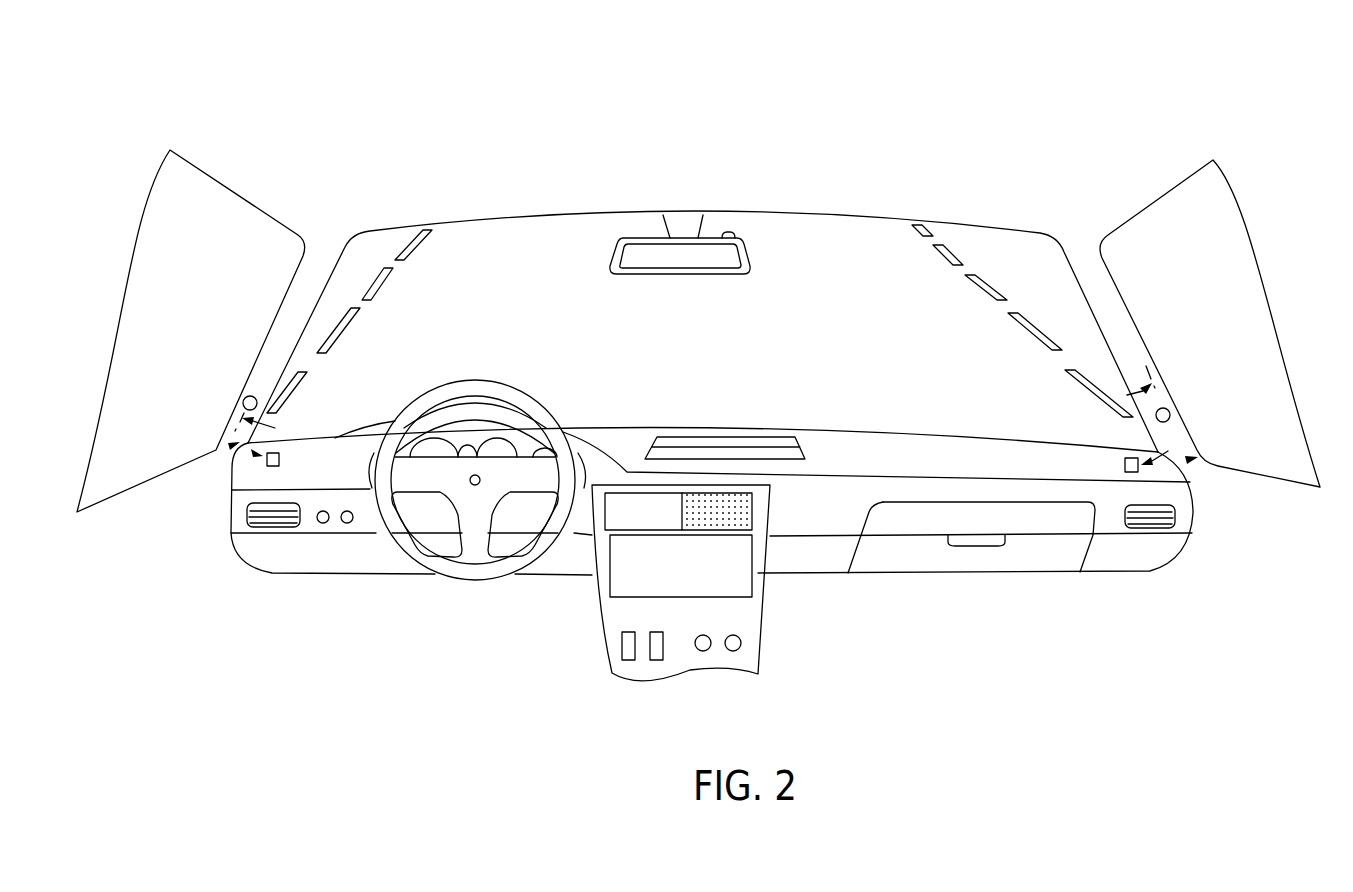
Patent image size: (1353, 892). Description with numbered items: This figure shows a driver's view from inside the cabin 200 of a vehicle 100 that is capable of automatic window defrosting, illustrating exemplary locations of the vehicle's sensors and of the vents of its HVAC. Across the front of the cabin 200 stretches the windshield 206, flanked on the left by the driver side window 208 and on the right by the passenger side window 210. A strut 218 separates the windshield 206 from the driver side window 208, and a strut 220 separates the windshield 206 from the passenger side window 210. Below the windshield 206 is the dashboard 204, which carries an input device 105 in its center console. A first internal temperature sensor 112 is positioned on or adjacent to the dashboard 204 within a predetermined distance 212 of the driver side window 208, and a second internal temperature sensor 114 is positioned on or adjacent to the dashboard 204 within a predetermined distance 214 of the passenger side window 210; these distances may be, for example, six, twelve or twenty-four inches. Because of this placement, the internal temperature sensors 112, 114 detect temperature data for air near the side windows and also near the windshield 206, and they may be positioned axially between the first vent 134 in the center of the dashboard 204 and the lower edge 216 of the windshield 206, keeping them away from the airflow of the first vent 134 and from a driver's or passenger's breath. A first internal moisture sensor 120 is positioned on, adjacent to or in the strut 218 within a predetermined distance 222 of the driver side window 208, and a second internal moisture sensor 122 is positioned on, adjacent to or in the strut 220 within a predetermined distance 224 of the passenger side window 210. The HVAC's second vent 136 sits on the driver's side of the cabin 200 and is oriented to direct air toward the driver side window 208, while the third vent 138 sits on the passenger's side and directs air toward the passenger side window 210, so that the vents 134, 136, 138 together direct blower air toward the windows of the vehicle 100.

The vehicle 100 is at (949, 174).
The input device 105 is at (727, 582).
The first internal temperature sensor 112 is at (267, 463).
The second internal temperature sensor 114 is at (1123, 465).
The first internal moisture sensor 120 is at (246, 397).
The second internal moisture sensor 122 is at (1170, 412).
The first vent 134 is at (803, 458).
The second vent 136 is at (247, 510).
The third vent 138 is at (1177, 522).
The cabin 200 is at (250, 595).
The dashboard 204 is at (935, 450).
The windshield 206 is at (485, 250).
The driver side window 208 is at (218, 215).
The passenger side window 210 is at (1217, 188).
The predetermined distance 212 is at (252, 453).
The predetermined distance 214 is at (1186, 461).
The lower edge of the windshield 216 is at (863, 430).
The strut 218 is at (268, 333).
The strut 220 is at (1118, 315).
The predetermined distance 222 is at (216, 406).
The predetermined distance 224 is at (1177, 365).